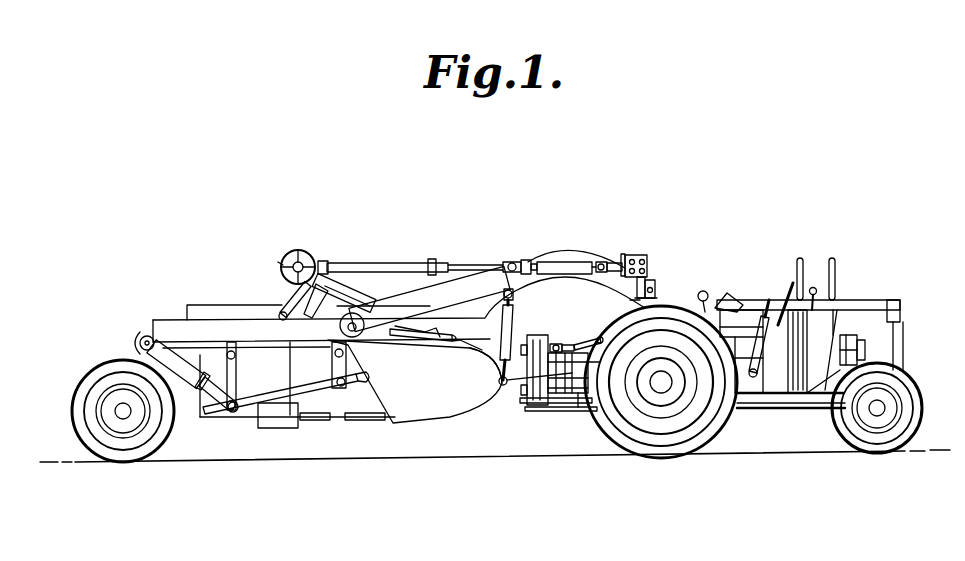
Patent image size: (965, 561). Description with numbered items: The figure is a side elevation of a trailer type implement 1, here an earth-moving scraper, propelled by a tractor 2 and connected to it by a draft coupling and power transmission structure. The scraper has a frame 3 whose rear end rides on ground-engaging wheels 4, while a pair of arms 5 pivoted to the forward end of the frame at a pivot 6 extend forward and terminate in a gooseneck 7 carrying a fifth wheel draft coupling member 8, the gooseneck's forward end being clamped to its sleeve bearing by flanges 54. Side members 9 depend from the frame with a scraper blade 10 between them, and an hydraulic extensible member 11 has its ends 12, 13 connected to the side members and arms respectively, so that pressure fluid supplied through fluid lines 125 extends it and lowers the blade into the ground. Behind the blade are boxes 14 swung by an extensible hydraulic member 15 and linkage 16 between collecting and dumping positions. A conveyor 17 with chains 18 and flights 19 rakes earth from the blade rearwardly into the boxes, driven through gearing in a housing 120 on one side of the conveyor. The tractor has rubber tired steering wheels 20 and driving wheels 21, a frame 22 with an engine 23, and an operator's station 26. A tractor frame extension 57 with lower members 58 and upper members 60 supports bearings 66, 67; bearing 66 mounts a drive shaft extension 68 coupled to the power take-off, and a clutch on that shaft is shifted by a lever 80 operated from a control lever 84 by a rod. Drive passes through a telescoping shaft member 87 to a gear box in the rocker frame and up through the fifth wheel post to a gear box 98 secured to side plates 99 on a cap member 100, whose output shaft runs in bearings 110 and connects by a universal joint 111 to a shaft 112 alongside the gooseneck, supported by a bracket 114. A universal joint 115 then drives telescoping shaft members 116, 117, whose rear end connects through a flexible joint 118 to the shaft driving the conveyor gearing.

The trailer type implement 1 is at (137, 357).
The tractor 2 is at (903, 372).
The frame 3 is at (165, 320).
The ground-engaging wheels 4 is at (78, 432).
The arms 5 is at (422, 292).
The pivot 6 is at (340, 327).
The gooseneck 7 is at (578, 250).
The draft coupling member 8 is at (652, 285).
The side members 9 is at (410, 412).
The scraper blade 10 is at (452, 414).
The hydraulic extensible member 11 is at (488, 322).
The end of extensible member 12 is at (507, 393).
The end of extensible member 13 is at (515, 297).
The boxes 14 is at (306, 414).
The extensible hydraulic member 15 is at (208, 402).
The linkage 16 is at (281, 395).
The conveyor 17 is at (310, 255).
The chains 18 is at (360, 291).
The flights 19 is at (375, 263).
The steering wheels 20 is at (925, 436).
The driving wheels 21 is at (694, 428).
The tractor frame 22 is at (781, 400).
The engine 23 is at (845, 335).
The operator's station 26 is at (716, 308).
The flanges 54 is at (660, 298).
The tractor frame extension 57 is at (553, 407).
The lower frame members 58 is at (584, 413).
The upper frame members 60 is at (562, 344).
The bearing 66 is at (520, 406).
The bearing 67 is at (528, 340).
The drive shaft extension 68 is at (579, 412).
The lever 80 is at (505, 384).
The control lever 84 is at (755, 327).
The telescoping drive shaft member 87 is at (580, 345).
The gear box 98 is at (655, 270).
The side plates 99 is at (640, 255).
The cap member 100 is at (650, 278).
The bearings 110 is at (627, 255).
The universal joint 111 is at (602, 262).
The shaft 112 is at (560, 262).
The bracket 114 is at (533, 262).
The universal joint 115 is at (510, 261).
The telescoping shaft member 116 is at (455, 265).
The telescoping shaft member 117 is at (405, 262).
The flexible joint 118 is at (345, 272).
The housing 120 is at (296, 250).
The fluid lines 125 is at (425, 333).